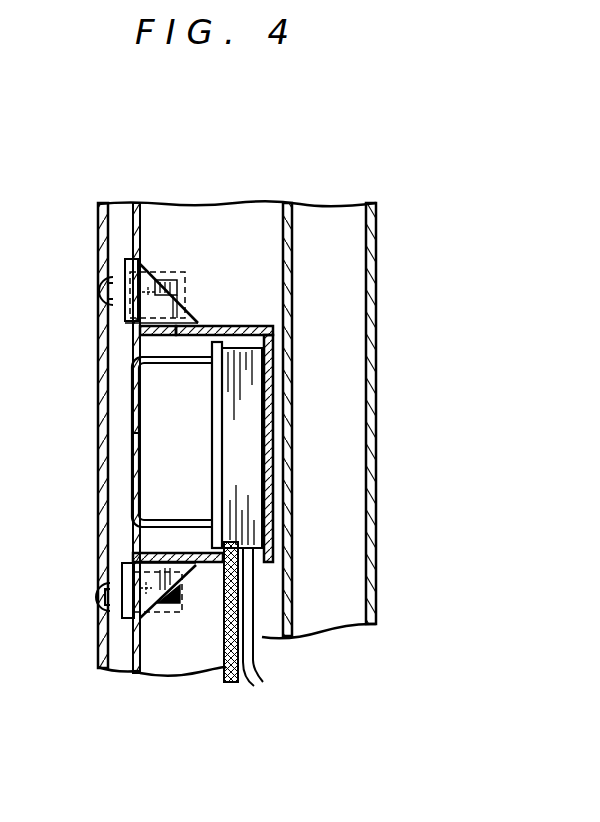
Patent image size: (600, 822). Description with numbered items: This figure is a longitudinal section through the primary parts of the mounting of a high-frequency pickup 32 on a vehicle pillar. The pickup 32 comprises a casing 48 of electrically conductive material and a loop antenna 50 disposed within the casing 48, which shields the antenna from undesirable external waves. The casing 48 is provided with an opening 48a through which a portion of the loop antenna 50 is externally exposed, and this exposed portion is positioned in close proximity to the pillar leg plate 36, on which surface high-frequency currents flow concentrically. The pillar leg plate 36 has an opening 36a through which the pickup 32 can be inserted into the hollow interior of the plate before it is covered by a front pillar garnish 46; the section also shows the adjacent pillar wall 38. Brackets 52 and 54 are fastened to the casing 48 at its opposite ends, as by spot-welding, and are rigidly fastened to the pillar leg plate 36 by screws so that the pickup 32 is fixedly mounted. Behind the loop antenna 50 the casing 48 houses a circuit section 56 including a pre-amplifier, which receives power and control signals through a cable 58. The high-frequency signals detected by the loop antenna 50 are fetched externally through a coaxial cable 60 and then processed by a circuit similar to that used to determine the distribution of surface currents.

The high-frequency pickup 32 is at (291, 372).
The pillar leg plate 36 is at (130, 673).
The opening 36a is at (133, 243).
The outer pipe wall 38 is at (376, 505).
The front pillar garnish 46 is at (98, 440).
The casing 48 is at (232, 326).
The opening 48a is at (140, 328).
The loop antenna 50 is at (140, 426).
The bracket 52 is at (178, 318).
The bracket 54 is at (176, 574).
The circuit section 56 is at (245, 436).
The cable 58 is at (263, 670).
The coaxial cable 60 is at (222, 668).